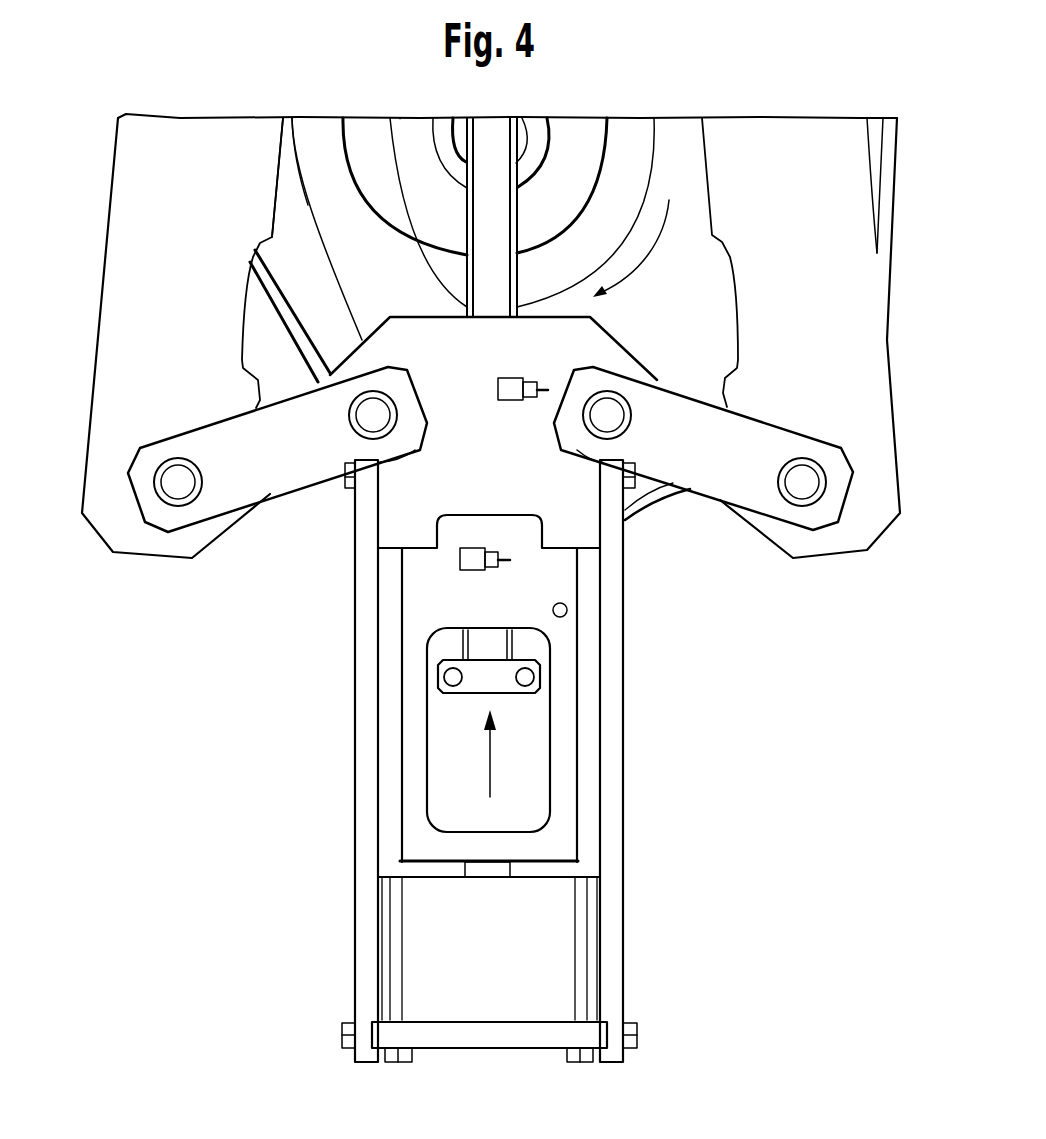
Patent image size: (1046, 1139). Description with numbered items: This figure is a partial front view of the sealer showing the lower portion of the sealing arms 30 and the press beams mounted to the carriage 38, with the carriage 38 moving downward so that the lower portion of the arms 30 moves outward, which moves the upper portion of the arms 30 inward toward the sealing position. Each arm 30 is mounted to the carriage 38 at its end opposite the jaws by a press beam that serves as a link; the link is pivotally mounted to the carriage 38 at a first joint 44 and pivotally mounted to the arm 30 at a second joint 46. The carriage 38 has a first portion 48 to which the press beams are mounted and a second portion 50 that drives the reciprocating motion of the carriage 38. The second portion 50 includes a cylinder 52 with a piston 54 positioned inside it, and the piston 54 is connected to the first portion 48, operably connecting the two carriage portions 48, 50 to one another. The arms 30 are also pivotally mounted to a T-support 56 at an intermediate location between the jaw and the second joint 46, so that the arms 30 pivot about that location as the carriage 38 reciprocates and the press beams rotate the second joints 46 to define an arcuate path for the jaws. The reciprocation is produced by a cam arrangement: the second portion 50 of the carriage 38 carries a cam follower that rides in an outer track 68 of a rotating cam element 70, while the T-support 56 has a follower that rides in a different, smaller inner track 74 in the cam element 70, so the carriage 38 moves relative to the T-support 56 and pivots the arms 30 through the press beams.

The arms 30 is at (105, 356).
The carriage 38 is at (665, 370).
The first joint 44 is at (367, 418).
The second joint 46 is at (180, 488).
The first portion 48 is at (650, 358).
The second portion 50 is at (591, 708).
The cylinder 52 is at (548, 793).
The piston 54 is at (473, 683).
The T-support 56 is at (497, 130).
The outer track 68 is at (285, 126).
The cam element 70 is at (411, 126).
The inner track 74 is at (395, 133).